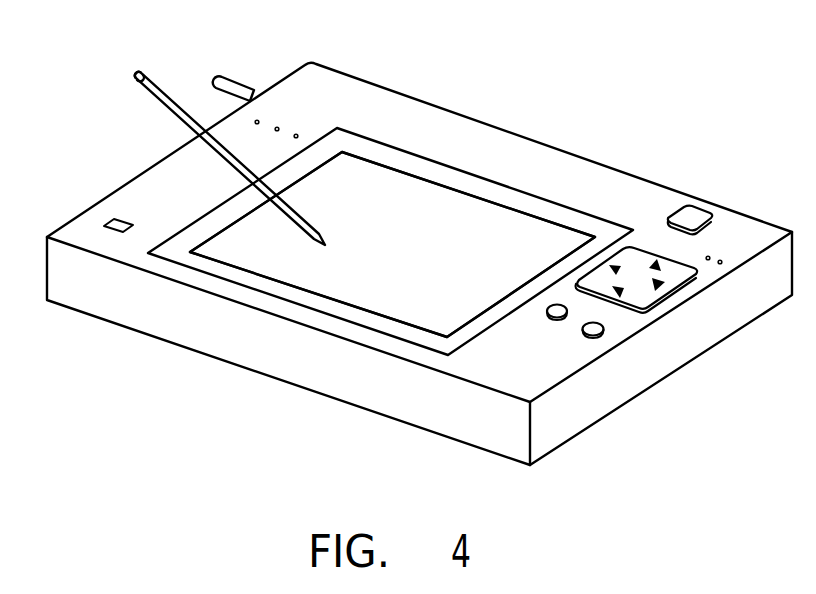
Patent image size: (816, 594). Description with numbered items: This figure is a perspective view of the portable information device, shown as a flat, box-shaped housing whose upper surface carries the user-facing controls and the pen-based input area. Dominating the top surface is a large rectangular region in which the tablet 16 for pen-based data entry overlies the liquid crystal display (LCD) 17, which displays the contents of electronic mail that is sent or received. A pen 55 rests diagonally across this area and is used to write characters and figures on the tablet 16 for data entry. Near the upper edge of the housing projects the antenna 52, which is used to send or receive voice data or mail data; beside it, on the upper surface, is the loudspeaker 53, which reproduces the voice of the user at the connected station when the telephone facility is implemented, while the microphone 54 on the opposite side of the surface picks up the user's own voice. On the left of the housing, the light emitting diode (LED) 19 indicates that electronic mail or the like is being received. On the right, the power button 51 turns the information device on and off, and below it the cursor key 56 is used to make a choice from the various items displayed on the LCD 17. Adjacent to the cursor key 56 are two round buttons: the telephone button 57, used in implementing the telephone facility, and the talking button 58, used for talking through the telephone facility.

The tablet 16 is at (267, 253).
The liquid crystal display (LCD) 17 is at (392, 244).
The light emitting diode (LED) 19 is at (115, 218).
The power button 51 is at (686, 206).
The antenna 52 is at (229, 81).
The loudspeaker 53 is at (323, 77).
The microphone 54 is at (742, 230).
The pen 55 is at (157, 100).
The cursor key 56 is at (661, 297).
The telephone button 57 is at (548, 316).
The talking button 58 is at (597, 337).